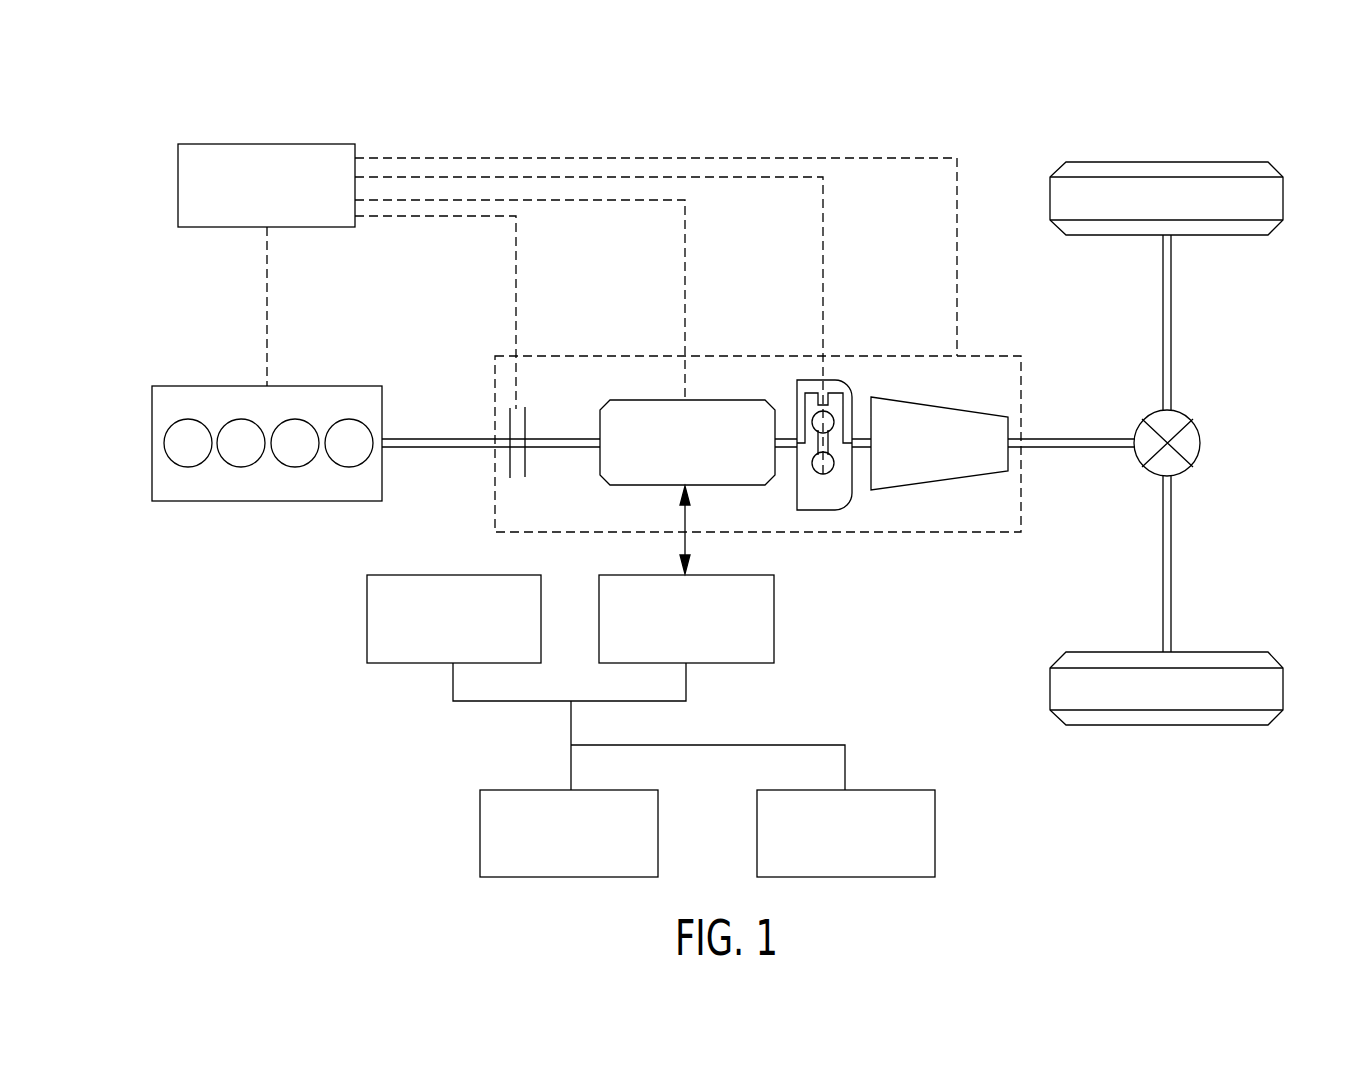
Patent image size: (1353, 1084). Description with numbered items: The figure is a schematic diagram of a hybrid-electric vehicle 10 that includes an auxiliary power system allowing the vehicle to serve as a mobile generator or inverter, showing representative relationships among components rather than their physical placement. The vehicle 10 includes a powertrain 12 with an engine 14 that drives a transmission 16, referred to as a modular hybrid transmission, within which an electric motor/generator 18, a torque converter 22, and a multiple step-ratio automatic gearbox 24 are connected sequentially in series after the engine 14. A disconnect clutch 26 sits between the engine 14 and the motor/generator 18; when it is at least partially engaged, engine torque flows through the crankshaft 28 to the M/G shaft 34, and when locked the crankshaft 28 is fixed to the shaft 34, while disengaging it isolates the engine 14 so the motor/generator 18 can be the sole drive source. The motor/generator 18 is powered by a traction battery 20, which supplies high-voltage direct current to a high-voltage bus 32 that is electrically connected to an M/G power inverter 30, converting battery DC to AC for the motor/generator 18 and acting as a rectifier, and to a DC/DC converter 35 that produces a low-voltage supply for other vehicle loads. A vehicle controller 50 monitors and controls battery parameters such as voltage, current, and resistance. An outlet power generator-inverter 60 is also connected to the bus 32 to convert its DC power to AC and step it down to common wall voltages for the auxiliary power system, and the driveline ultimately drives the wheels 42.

The hybrid-electric vehicle 10 is at (1022, 122).
The powertrain 12 is at (750, 205).
The engine 14 is at (212, 386).
The transmission 16 is at (738, 356).
The electric motor/generator (M/G) 18 is at (648, 400).
The traction battery 20 is at (480, 835).
The torque converter 22 is at (808, 380).
The gearbox 24 is at (922, 398).
The disconnect clutch 26 is at (510, 465).
The crankshaft 28 is at (455, 439).
The M/G power inverter 30 is at (774, 620).
The high-voltage bus 32 is at (571, 740).
The M/G shaft 34 is at (570, 439).
The DC/DC converter 35 is at (367, 617).
The wheel 42 is at (1070, 697).
The vehicle controller 50 is at (178, 190).
The outlet power generator-inverter 60 is at (757, 835).